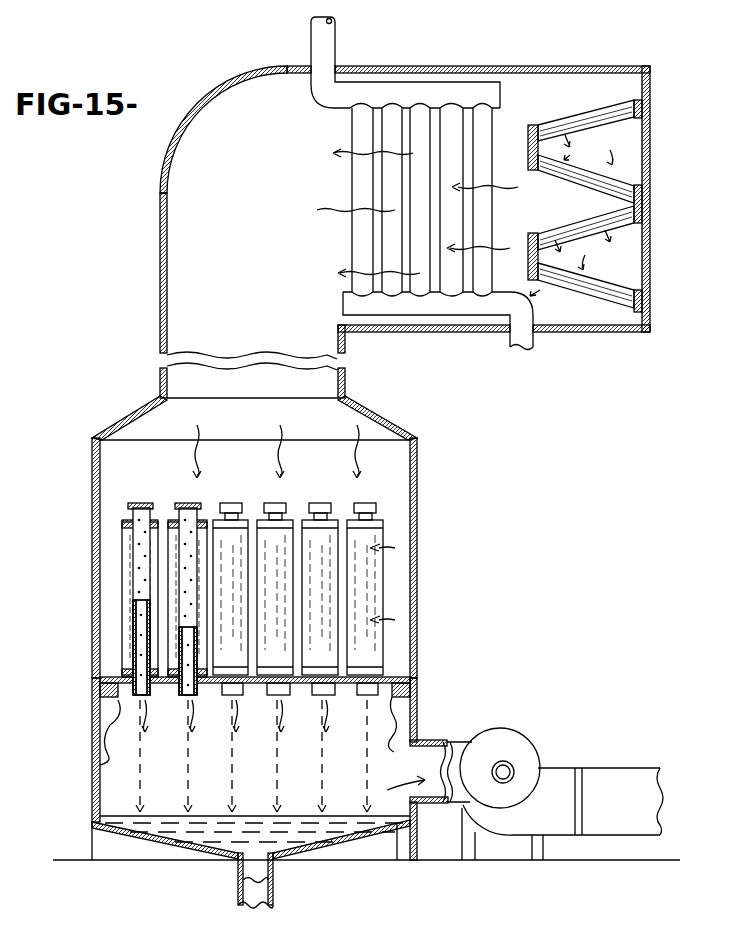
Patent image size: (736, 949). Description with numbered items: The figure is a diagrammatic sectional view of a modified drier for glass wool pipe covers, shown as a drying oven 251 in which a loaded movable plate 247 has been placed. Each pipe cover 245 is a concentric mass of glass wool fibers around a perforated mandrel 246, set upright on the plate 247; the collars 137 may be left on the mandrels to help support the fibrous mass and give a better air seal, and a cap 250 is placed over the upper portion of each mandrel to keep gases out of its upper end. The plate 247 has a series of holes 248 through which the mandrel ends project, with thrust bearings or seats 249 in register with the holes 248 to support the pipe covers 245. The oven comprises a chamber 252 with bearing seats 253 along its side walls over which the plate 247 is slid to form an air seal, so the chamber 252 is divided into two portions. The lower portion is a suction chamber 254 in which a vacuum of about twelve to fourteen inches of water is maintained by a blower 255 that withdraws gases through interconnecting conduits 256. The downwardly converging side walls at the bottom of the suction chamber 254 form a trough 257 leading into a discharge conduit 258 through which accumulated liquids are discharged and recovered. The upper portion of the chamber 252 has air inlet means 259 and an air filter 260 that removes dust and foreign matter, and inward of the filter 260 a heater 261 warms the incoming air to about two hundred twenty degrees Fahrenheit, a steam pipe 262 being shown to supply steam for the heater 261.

The collars 137 is at (122, 523).
The pipe covers 245 is at (122, 600).
The perforated mandrel 246 is at (140, 552).
The movable plate 247 is at (252, 697).
The holes 248 is at (253, 756).
The thrust bearings or seats 249 is at (92, 775).
The cap 250 is at (183, 503).
The drying oven 251 is at (370, 412).
The chamber 252 is at (393, 463).
The bearing seats 253 is at (92, 735).
The suction chamber 254 is at (400, 774).
The blower 255 is at (523, 762).
The interconnecting conduits 256 is at (437, 765).
The trough 257 is at (297, 835).
The discharge conduit 258 is at (240, 870).
The air inlet means 259 is at (645, 262).
The air filter 260 is at (633, 237).
The heater 261 is at (418, 123).
The steam pipe 262 is at (530, 337).